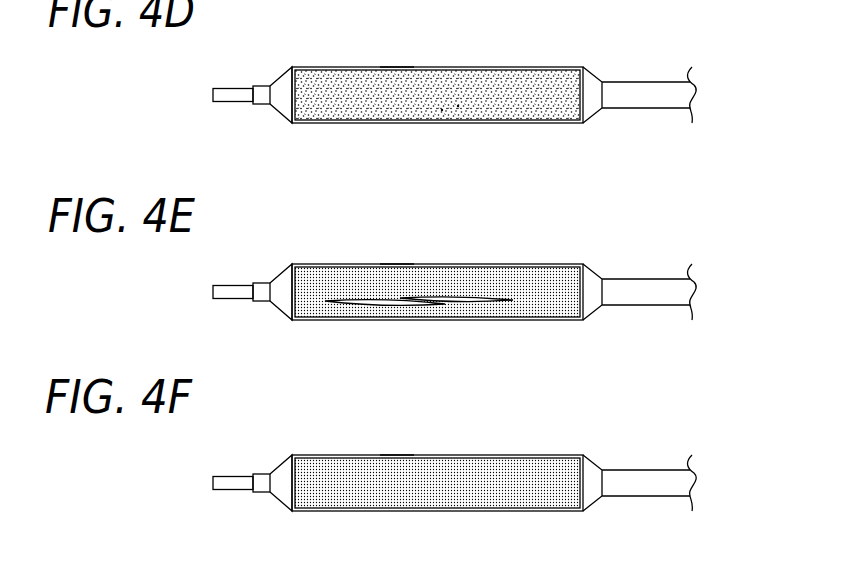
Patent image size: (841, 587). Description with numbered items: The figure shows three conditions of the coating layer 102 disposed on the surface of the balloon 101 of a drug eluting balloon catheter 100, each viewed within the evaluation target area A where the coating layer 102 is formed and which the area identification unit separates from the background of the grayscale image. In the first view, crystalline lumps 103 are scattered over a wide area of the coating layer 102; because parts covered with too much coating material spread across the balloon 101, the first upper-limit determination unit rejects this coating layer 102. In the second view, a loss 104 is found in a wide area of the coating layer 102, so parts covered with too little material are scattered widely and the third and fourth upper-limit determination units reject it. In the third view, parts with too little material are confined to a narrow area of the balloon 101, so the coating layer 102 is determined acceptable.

In FIG. 4D, the drug eluting balloon catheter 100 is at (454, 106).
In FIG. 4E, the drug eluting balloon catheter 100 is at (454, 298).
In FIG. 4F, the drug eluting balloon catheter 100 is at (454, 487).
In FIG. 4D, the balloon 101 is at (513, 178).
In FIG. 4E, the balloon 101 is at (497, 320).
In FIG. 4F, the balloon 101 is at (497, 513).
In FIG. 4D, the coating layer 102 is at (416, 100).
In FIG. 4E, the coating layer 102 is at (427, 312).
In FIG. 4F, the coating layer 102 is at (430, 496).
In FIG. 4D, the crystalline lumps 103 is at (442, 110).
In FIG. 4E, the loss 104 is at (447, 300).
In FIG. 4D, the evaluation target area A is at (397, 67).
In FIG. 4E, the evaluation target area A is at (397, 264).
In FIG. 4F, the evaluation target area A is at (396, 455).